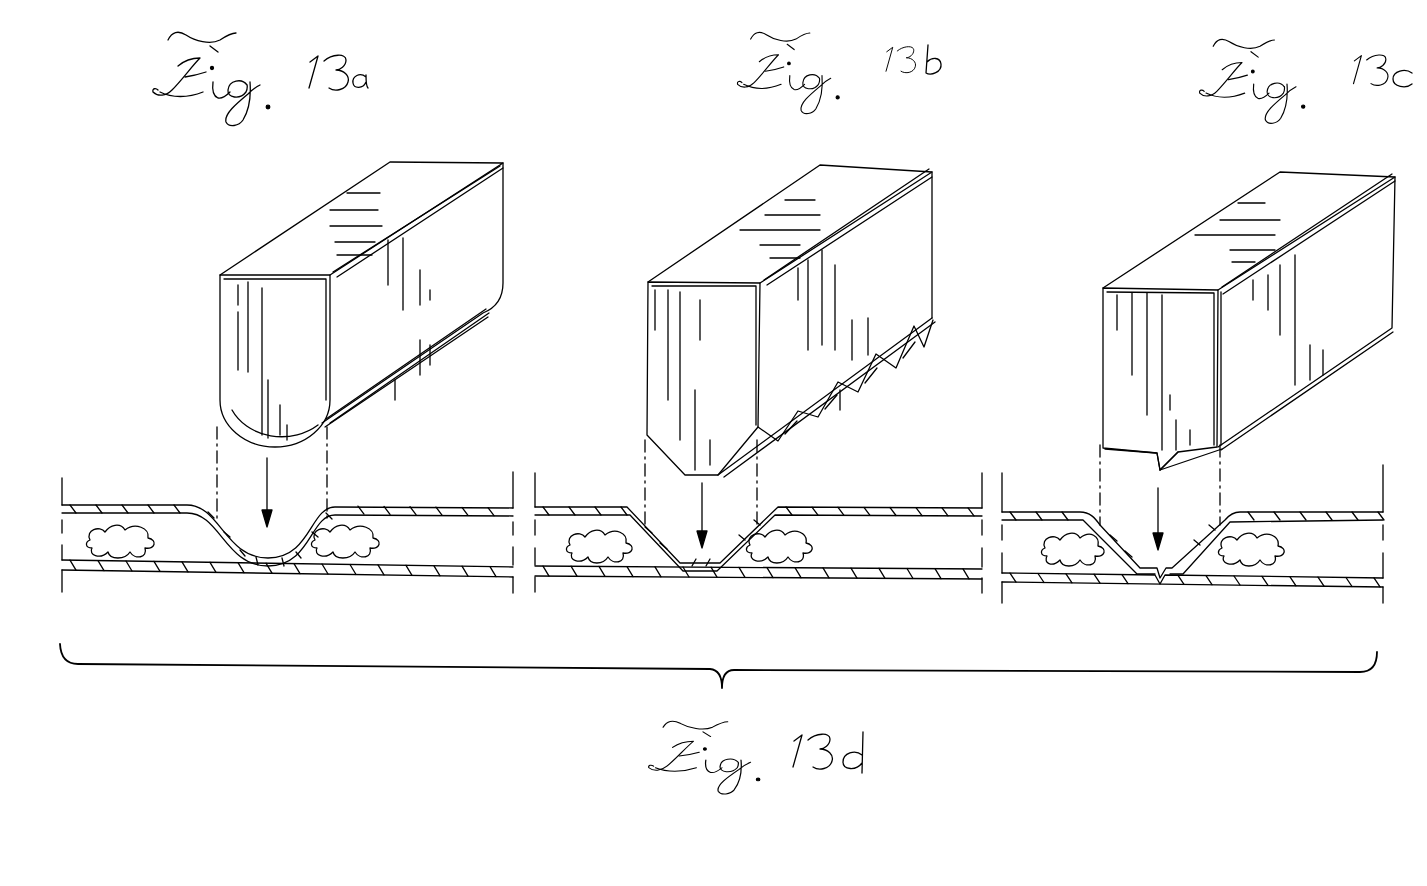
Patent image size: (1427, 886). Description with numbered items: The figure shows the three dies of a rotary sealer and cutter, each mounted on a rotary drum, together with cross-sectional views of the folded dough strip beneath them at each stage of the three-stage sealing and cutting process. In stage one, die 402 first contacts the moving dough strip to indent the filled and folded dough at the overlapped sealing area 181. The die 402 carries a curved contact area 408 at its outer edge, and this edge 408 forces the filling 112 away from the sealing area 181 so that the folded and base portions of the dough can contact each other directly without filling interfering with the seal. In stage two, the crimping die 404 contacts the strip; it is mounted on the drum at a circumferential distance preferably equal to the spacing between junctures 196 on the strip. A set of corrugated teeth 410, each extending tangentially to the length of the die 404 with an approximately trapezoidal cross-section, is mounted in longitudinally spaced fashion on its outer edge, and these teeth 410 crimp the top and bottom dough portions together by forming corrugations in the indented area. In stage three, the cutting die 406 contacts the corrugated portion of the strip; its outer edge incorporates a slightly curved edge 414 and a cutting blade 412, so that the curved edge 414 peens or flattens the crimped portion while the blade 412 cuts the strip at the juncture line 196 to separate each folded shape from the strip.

In FIG. 13A, the die 402 is at (500, 212).
In FIG. 13B, the crimping die 404 is at (928, 227).
In FIG. 13C, the cutting die 406 is at (1235, 212).
In FIG. 13A, the curved contact area 408 is at (300, 432).
In FIG. 13B, the corrugated teeth 410 is at (760, 455).
In FIG. 13C, the cutting blade 412 is at (1168, 468).
In FIG. 13C, the curved edge 414 is at (1117, 458).
In FIG. 13A, the juncture 196 is at (250, 554).
In FIG. 13B, the juncture 196 is at (690, 555).
In FIG. 13C, the juncture 196 is at (1145, 567).
In FIG. 13A, the filling 112 is at (480, 556).
In FIG. 13B, the filling 112 is at (898, 560).
In FIG. 13C, the filling 112 is at (1348, 565).
In FIG. 13A, the overlapped sealing area 181 is at (240, 577).
In FIG. 13B, the overlapped sealing area 181 is at (713, 579).
In FIG. 13C, the overlapped sealing area 181 is at (1137, 583).